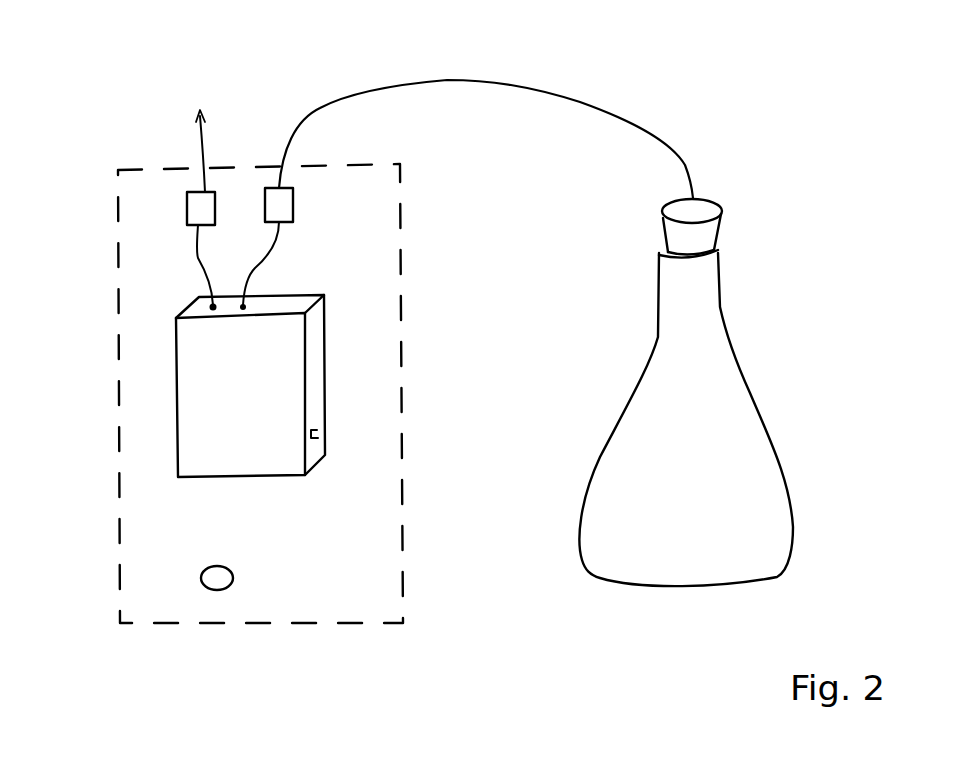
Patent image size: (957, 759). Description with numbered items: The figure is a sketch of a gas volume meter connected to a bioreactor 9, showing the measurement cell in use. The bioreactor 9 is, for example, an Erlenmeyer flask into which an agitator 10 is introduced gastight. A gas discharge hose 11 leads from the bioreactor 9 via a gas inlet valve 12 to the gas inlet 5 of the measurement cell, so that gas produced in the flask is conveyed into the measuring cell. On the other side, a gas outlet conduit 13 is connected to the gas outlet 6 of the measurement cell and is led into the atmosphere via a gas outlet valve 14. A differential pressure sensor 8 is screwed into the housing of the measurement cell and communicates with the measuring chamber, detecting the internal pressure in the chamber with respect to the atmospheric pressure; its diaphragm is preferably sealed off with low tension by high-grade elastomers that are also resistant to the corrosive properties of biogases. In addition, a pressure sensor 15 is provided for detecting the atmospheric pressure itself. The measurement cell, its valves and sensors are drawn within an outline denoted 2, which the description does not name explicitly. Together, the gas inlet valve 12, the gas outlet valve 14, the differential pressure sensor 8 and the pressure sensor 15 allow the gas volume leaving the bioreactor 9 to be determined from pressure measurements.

The device housing 2 is at (162, 428).
The gas inlet 5 is at (257, 293).
The gas outlet 6 is at (197, 300).
The differential pressure sensor 8 is at (318, 434).
The bioreactor 9 is at (743, 407).
The agitator 10 is at (712, 227).
The gas discharge hose 11 is at (565, 92).
The gas inlet valve 12 is at (295, 202).
The gas outlet conduit 13 is at (197, 248).
The gas outlet valve 14 is at (187, 207).
The pressure sensor 15 is at (217, 590).